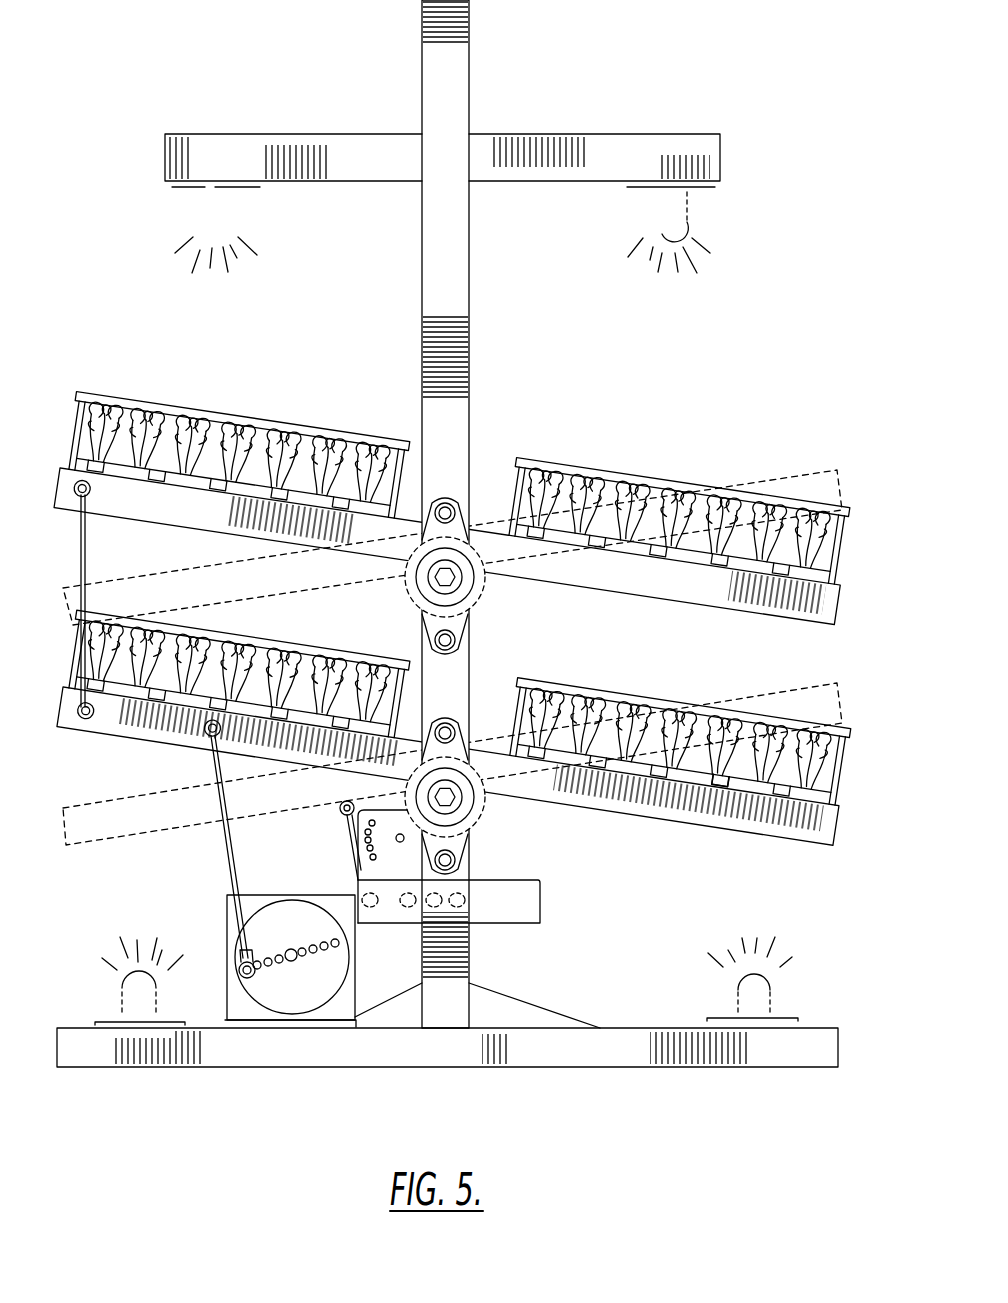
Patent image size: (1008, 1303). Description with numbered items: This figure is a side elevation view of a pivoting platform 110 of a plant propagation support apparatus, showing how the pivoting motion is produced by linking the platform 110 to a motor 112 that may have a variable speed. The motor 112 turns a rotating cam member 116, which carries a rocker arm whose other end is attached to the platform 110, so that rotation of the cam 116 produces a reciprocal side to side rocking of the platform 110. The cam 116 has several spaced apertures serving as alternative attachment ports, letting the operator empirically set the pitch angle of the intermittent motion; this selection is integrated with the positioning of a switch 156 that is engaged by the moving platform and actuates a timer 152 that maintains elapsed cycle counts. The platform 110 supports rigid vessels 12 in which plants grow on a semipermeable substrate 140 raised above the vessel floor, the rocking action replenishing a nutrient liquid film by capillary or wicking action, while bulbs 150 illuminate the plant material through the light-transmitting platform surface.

The rigid vessel 12 is at (842, 763).
The platform 110 is at (838, 827).
The motor 112 is at (237, 1013).
The cam member 116 is at (297, 1000).
The semipermeable substrate 140 is at (712, 770).
The bulbs 150 is at (680, 215).
The timer 152 is at (393, 872).
The switch 156 is at (347, 812).